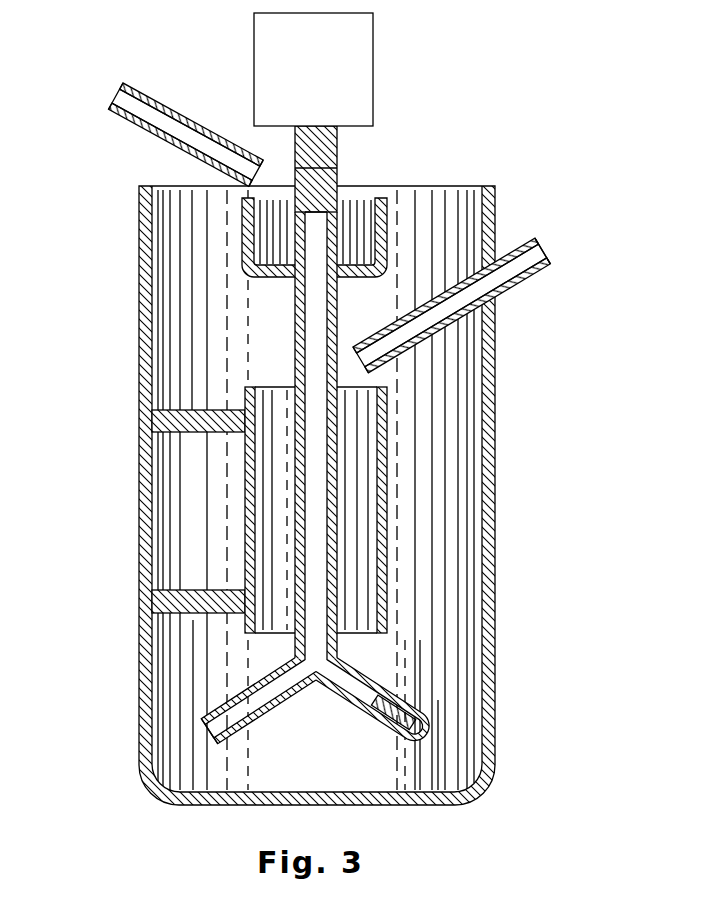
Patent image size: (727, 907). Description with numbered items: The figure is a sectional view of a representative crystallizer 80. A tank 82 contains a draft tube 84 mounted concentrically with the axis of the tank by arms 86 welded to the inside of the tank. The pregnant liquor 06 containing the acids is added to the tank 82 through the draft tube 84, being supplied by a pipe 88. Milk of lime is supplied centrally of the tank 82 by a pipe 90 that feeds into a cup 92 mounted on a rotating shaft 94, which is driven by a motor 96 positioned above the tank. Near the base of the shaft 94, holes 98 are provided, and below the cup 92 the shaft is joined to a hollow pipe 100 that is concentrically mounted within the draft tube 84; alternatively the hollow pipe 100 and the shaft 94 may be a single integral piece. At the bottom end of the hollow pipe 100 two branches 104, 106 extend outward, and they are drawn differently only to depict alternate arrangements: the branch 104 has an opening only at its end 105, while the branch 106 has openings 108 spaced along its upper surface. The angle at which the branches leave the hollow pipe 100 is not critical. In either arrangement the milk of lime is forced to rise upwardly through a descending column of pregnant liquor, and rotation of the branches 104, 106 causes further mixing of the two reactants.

The crystallizer 80 is at (110, 580).
The tank 82 is at (139, 370).
The draft tube 84 is at (243, 395).
The arms 86 is at (188, 437).
The pipe 88 is at (517, 293).
The pipe 90 is at (172, 104).
The cup 92 is at (242, 238).
The rotating shaft 94 is at (283, 145).
The motor 96 is at (373, 60).
The holes 98 is at (296, 240).
The hollow pipe 100 is at (356, 526).
The branch 104 is at (230, 697).
The end 105 is at (205, 732).
The branch 106 is at (437, 710).
The openings 108 is at (368, 688).
The pregnant liquor 06 is at (555, 240).